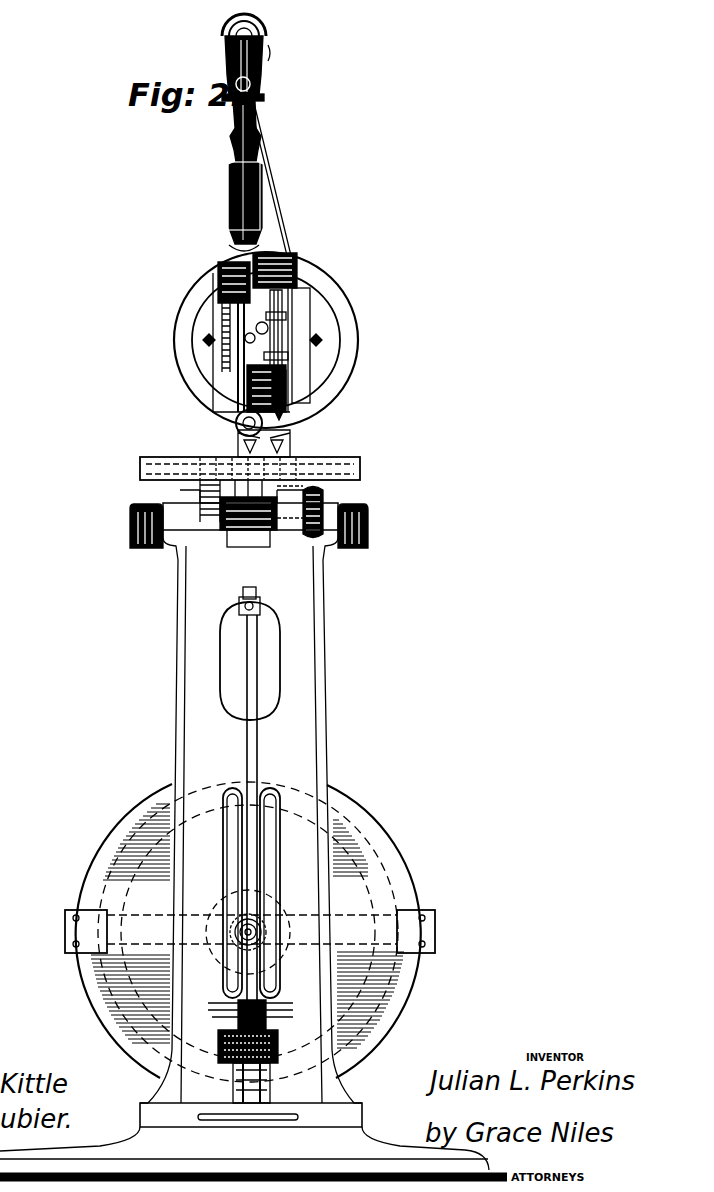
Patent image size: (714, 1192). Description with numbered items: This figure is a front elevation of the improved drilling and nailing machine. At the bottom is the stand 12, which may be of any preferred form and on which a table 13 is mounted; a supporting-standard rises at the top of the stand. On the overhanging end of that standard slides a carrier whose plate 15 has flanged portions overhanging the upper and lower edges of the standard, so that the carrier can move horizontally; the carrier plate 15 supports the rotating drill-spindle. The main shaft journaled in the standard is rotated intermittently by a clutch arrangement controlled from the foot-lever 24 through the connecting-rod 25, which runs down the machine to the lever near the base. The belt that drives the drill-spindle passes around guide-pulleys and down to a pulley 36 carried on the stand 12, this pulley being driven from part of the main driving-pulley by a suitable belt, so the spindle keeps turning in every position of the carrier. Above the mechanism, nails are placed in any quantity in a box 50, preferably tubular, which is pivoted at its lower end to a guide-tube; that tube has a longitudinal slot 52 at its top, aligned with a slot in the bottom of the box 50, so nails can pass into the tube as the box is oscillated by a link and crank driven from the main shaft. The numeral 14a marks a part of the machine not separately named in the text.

The nail box 50 is at (268, 50).
The longitudinal slot 52 is at (254, 173).
The ring frame of the register mechanism 14a is at (307, 303).
The carrier plate 15 is at (228, 370).
The table 13 is at (362, 468).
The stand 12 is at (325, 680).
The connecting-rod 25 is at (257, 665).
The pulley 36 is at (278, 905).
The foot-lever 24 is at (272, 1044).